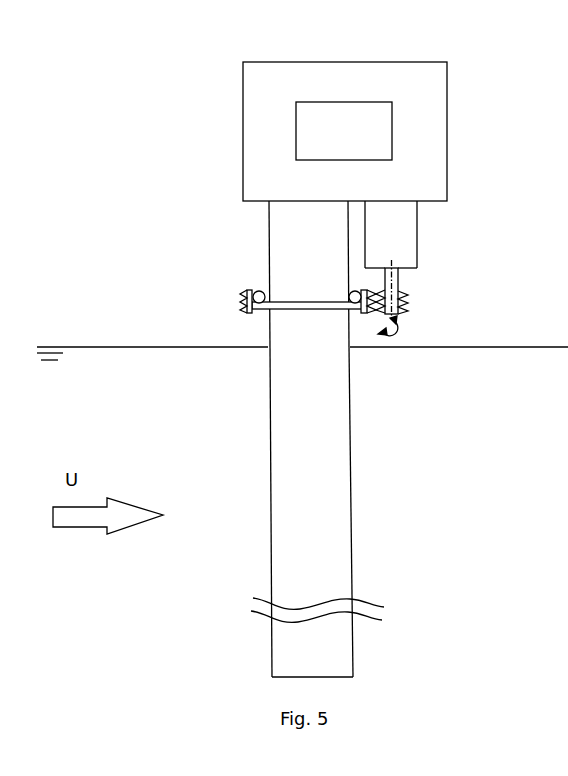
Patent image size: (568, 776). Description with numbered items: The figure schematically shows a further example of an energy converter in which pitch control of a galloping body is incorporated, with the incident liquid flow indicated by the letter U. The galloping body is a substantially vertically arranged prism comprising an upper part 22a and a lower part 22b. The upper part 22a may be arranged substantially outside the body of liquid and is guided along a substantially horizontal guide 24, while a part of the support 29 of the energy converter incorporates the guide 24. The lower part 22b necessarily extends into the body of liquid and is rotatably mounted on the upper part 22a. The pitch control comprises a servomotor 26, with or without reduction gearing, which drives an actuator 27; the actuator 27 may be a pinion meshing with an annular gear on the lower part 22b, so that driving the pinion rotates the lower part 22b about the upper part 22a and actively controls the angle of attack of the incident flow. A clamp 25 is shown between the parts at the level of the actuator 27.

The upper part 22a is at (293, 231).
The lower part 22b is at (312, 455).
The horizontal guide 24 is at (335, 123).
The clamp 25 is at (256, 292).
The servomotor 26 is at (395, 248).
The actuator 27 is at (403, 297).
The support 29 is at (423, 91).